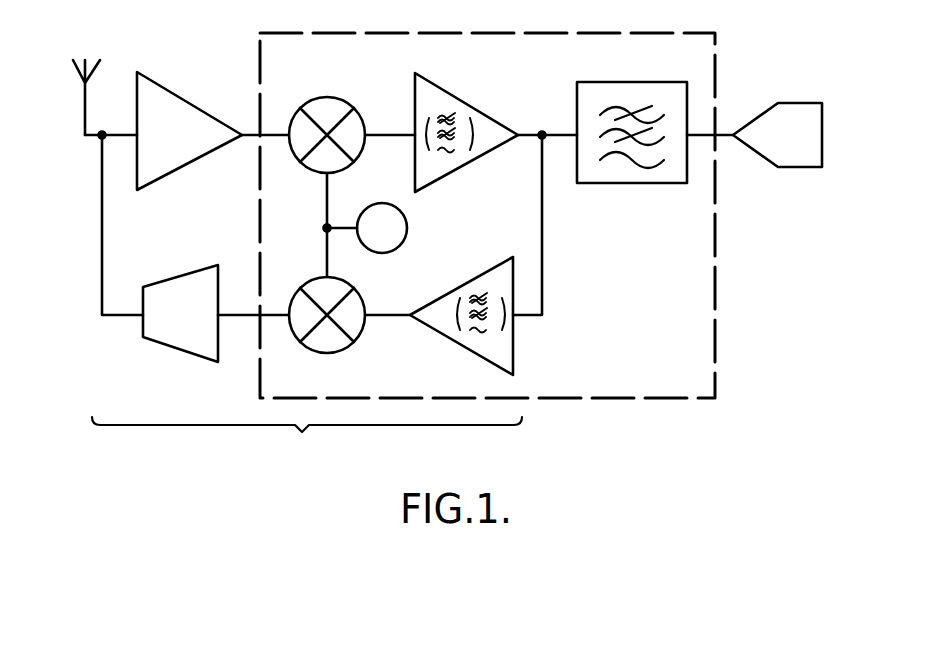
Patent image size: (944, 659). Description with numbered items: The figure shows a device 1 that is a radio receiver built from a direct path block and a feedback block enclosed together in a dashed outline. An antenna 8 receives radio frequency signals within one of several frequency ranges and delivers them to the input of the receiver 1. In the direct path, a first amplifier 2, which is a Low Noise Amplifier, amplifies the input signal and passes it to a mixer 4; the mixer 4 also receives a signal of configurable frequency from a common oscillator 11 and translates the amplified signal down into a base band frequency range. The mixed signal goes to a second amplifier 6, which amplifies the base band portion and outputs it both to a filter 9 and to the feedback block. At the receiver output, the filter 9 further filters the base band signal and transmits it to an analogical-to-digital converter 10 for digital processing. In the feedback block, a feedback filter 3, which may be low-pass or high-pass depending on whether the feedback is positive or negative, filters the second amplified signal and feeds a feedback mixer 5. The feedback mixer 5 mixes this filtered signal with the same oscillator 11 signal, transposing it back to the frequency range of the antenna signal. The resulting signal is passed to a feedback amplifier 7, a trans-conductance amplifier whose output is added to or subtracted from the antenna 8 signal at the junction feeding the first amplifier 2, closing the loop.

The device 1 is at (403, 251).
The first amplifier 2 is at (178, 95).
The feedback filter 3 is at (462, 346).
The mixer 4 is at (328, 97).
The feedback mixer 5 is at (335, 352).
The second amplifier 6 is at (462, 101).
The feedback amplifier 7 is at (160, 343).
The antenna 8 is at (80, 75).
The filter 9 is at (620, 82).
The analogical-to-digital converter 10 is at (790, 168).
The common oscillator 11 is at (405, 236).